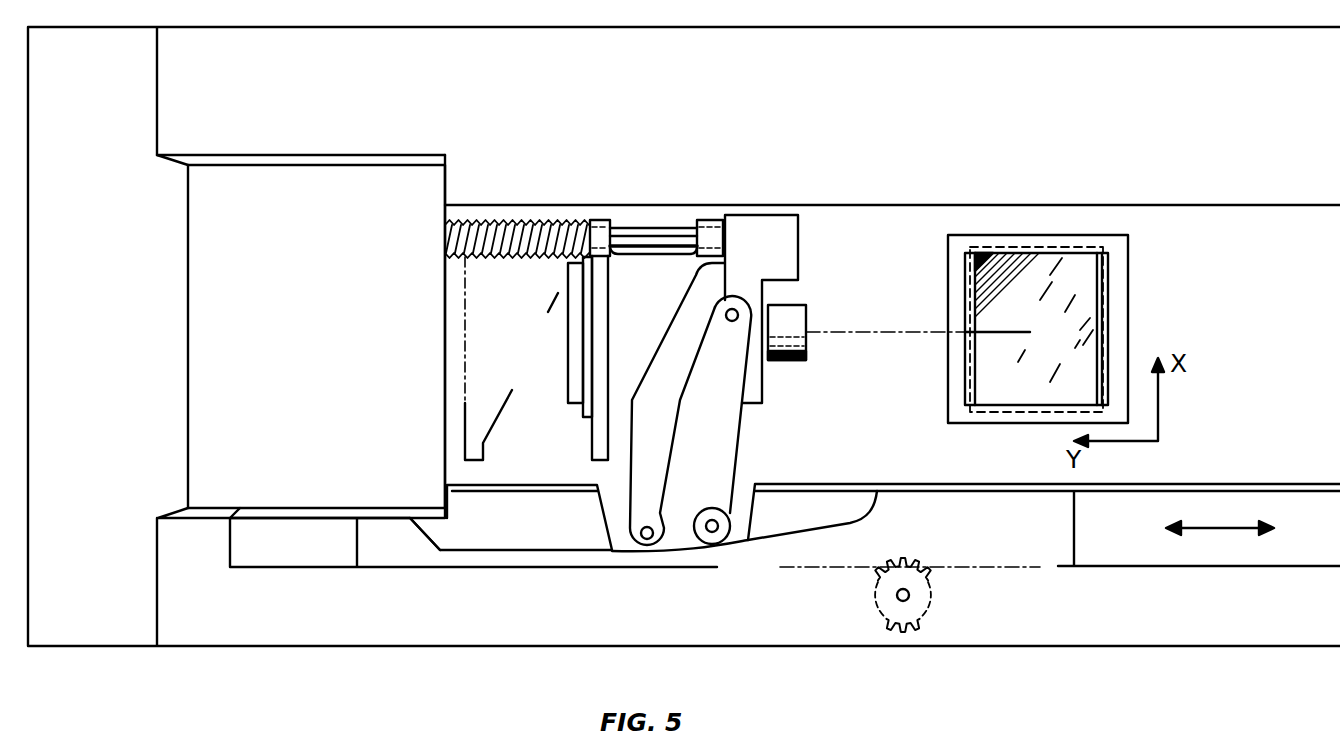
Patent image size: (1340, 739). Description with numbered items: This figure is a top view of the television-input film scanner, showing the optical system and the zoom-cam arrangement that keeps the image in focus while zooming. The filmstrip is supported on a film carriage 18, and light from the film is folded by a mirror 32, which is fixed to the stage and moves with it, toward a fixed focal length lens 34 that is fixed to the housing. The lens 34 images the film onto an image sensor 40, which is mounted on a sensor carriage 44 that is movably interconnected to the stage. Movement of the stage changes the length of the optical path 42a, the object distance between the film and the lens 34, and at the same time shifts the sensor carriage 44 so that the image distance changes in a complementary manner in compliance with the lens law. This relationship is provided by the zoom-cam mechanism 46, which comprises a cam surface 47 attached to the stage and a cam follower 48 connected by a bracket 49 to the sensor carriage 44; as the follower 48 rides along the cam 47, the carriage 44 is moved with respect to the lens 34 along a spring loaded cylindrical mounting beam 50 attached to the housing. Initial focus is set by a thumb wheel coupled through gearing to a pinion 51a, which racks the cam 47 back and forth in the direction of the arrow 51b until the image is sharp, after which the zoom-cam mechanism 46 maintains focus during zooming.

The film carriage 18 is at (1124, 308).
The mirror 32 is at (1072, 346).
The fixed focal length lens 34 is at (812, 352).
The image sensor 40 is at (568, 320).
The optical path 42a is at (872, 332).
The sensor carriage 44 is at (610, 397).
The zoom-cam mechanism 46 is at (757, 473).
The cam surface 47 is at (770, 532).
The cam follower 48 is at (712, 508).
The bracket 49 is at (725, 460).
The spring loaded cylindrical mounting beam 50 is at (645, 233).
The pinion 51a is at (937, 583).
The arrow 51b is at (1215, 530).